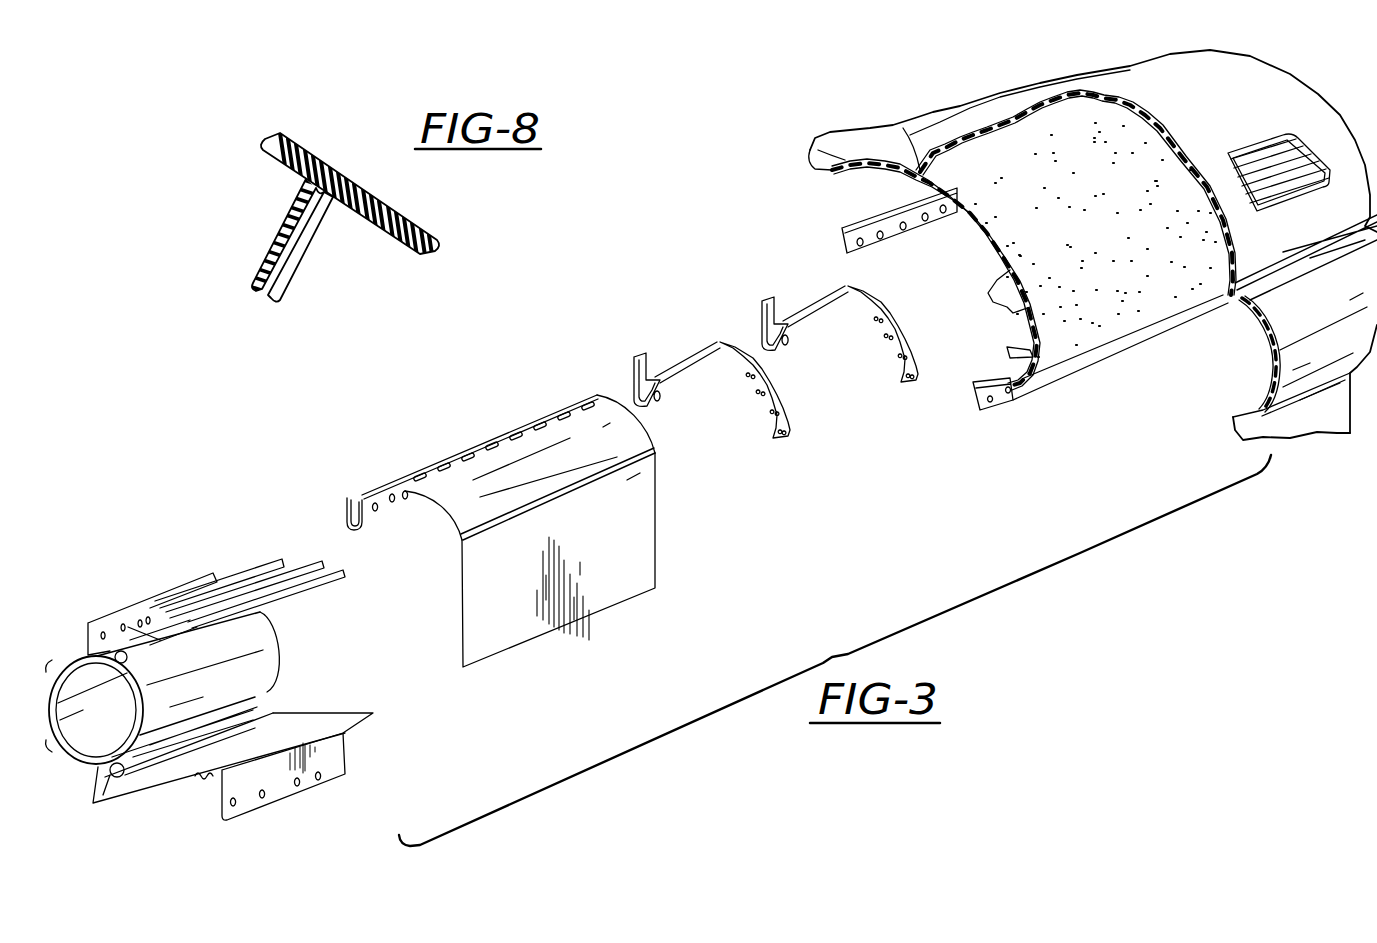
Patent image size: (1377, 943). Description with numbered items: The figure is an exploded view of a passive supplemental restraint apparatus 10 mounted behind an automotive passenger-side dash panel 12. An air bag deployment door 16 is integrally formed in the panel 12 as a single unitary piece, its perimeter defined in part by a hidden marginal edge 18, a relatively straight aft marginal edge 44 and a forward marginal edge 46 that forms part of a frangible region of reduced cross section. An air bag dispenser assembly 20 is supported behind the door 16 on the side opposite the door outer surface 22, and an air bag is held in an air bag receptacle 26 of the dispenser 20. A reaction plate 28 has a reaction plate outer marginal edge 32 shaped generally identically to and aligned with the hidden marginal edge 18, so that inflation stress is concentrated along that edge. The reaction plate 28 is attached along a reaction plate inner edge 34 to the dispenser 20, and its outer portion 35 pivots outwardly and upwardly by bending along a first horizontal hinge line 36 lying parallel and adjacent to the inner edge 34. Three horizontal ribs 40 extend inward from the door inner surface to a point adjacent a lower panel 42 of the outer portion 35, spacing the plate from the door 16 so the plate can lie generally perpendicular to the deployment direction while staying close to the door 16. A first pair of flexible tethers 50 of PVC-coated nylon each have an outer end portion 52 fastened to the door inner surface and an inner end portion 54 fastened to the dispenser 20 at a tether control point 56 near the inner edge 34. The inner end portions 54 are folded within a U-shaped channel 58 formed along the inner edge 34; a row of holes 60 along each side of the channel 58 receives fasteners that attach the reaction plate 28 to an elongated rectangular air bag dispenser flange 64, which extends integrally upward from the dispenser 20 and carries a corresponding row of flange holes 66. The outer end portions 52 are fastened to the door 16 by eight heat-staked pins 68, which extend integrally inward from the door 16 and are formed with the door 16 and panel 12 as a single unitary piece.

In FIG. 3, the heater assembly 10 is at (1281, 62).
In FIG. 3, the dash panel 12 is at (1255, 367).
In FIG. 8, the air bag deployment door 16 is at (300, 150).
In FIG. 3, the air bag deployment door 16 is at (1120, 165).
In FIG. 3, the hidden marginal edge 18 is at (1008, 383).
In FIG. 3, the air bag dispenser assembly 20 is at (207, 649).
In FIG. 3, the door outer surface 22 is at (1106, 277).
In FIG. 3, the air bag receptacle 26 is at (313, 723).
In FIG. 3, the reaction plate 28 is at (500, 550).
In FIG. 3, the reaction plate outer marginal edge 32 is at (451, 633).
In FIG. 3, the reaction plate inner edge 34 is at (347, 490).
In FIG. 3, the outer portion of the reaction plate 35 is at (613, 457).
In FIG. 3, the first horizontal hinge line 36 is at (360, 490).
In FIG. 3, the horizontal ribs 40 is at (1013, 350).
In FIG. 3, the lower panel 42 is at (513, 604).
In FIG. 3, the aft marginal edge 44 is at (922, 130).
In FIG. 3, the forward marginal edge 46 is at (1008, 390).
In FIG. 3, the flexible tethers 50 is at (743, 336).
In FIG. 3, the tether outer end portion 52 is at (880, 360).
In FIG. 3, the tether inner end portion 54 is at (633, 363).
In FIG. 3, the tether control point 56 is at (200, 578).
In FIG. 3, the U-shaped channel 58 is at (345, 527).
In FIG. 3, the holes 60 is at (406, 500).
In FIG. 3, the air bag dispenser flange 64 is at (160, 598).
In FIG. 3, the flange holes 66 is at (123, 622).
In FIG. 8, the heat-staked pins 68 is at (277, 253).